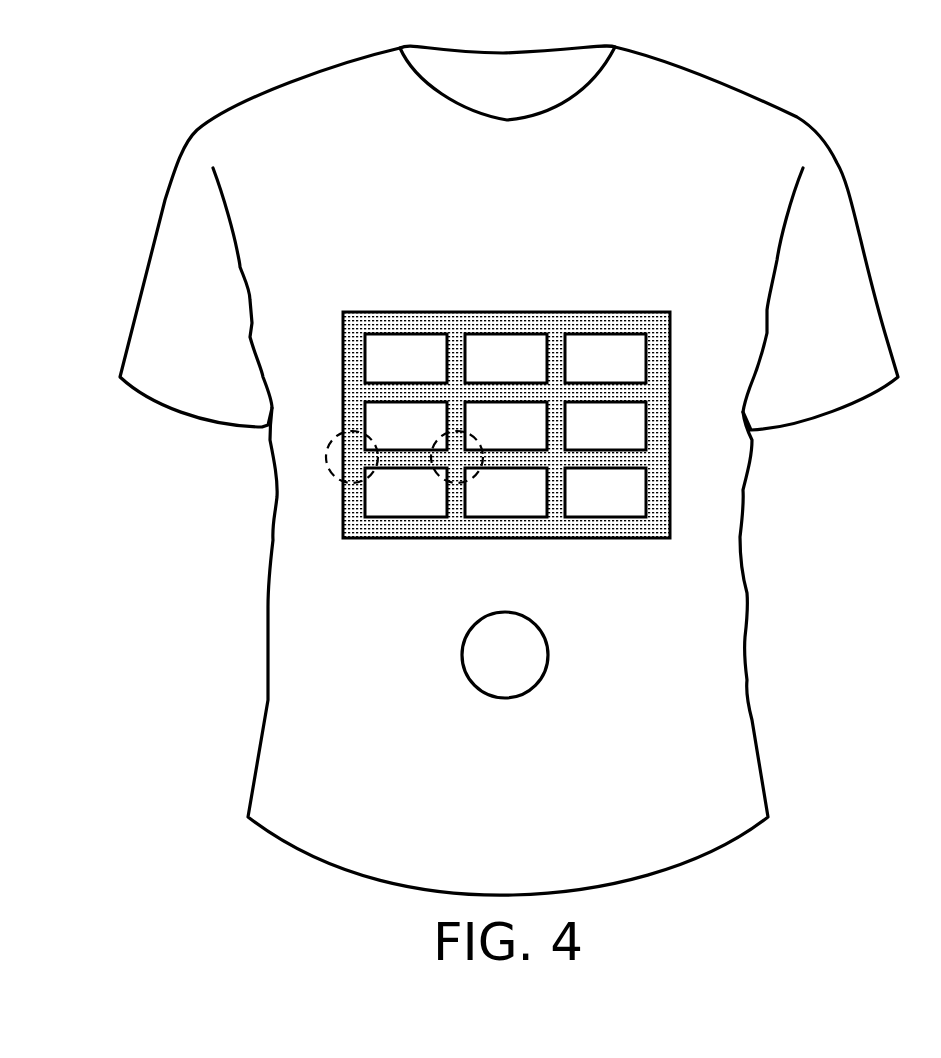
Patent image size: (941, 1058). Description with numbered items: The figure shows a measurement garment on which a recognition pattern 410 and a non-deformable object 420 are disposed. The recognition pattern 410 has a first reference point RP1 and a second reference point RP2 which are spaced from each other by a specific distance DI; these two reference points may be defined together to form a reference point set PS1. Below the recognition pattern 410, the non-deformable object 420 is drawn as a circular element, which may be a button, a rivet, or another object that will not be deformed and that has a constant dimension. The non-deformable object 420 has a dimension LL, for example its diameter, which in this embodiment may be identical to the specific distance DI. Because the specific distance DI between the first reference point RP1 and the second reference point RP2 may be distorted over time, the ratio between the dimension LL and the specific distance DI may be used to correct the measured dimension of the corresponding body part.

The recognition pattern 410 is at (385, 282).
The non-deformable object 420 is at (562, 634).
The reference point set PS1 is at (280, 504).
The first reference point RP1 is at (326, 456).
The second reference point RP2 is at (443, 477).
The specific distance DI is at (446, 558).
The dimension LL is at (548, 715).